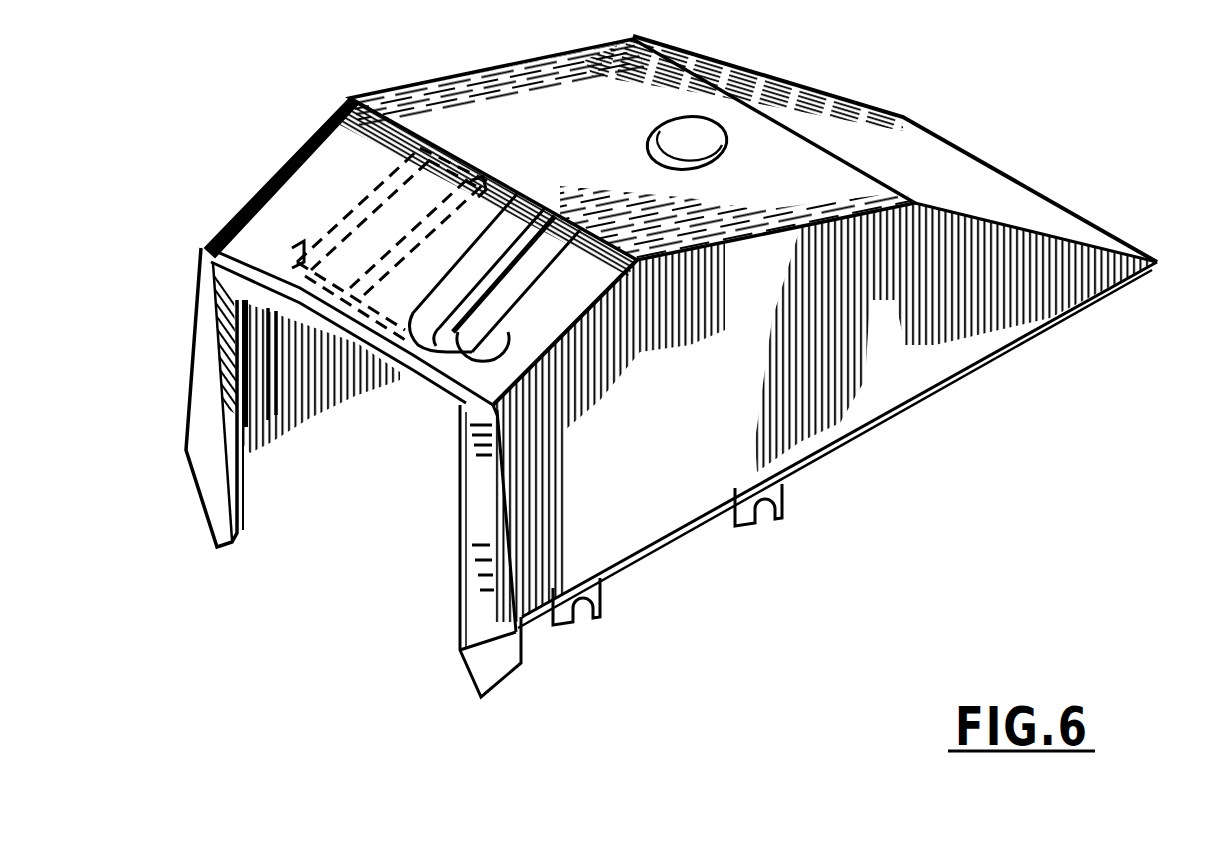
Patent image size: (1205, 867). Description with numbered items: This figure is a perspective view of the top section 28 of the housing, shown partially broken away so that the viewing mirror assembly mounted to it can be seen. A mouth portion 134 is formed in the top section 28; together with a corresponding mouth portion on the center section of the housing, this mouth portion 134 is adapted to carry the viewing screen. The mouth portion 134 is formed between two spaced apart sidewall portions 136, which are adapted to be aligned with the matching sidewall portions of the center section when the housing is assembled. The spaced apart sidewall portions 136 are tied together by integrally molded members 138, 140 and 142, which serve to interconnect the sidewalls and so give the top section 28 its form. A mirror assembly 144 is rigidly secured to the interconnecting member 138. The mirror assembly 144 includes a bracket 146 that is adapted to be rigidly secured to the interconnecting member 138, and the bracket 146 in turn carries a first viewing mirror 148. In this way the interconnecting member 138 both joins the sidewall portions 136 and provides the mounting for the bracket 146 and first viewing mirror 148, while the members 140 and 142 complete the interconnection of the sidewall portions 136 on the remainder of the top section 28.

The top section 28 is at (1053, 198).
The mouth portion 134 is at (307, 457).
The sidewall portions 136 is at (320, 383).
The interconnecting member 138 is at (258, 248).
The interconnecting member 140 is at (428, 110).
The interconnecting member 142 is at (893, 147).
The mirror assembly 144 is at (473, 364).
The bracket 146 is at (430, 345).
The first viewing mirror 148 is at (512, 350).